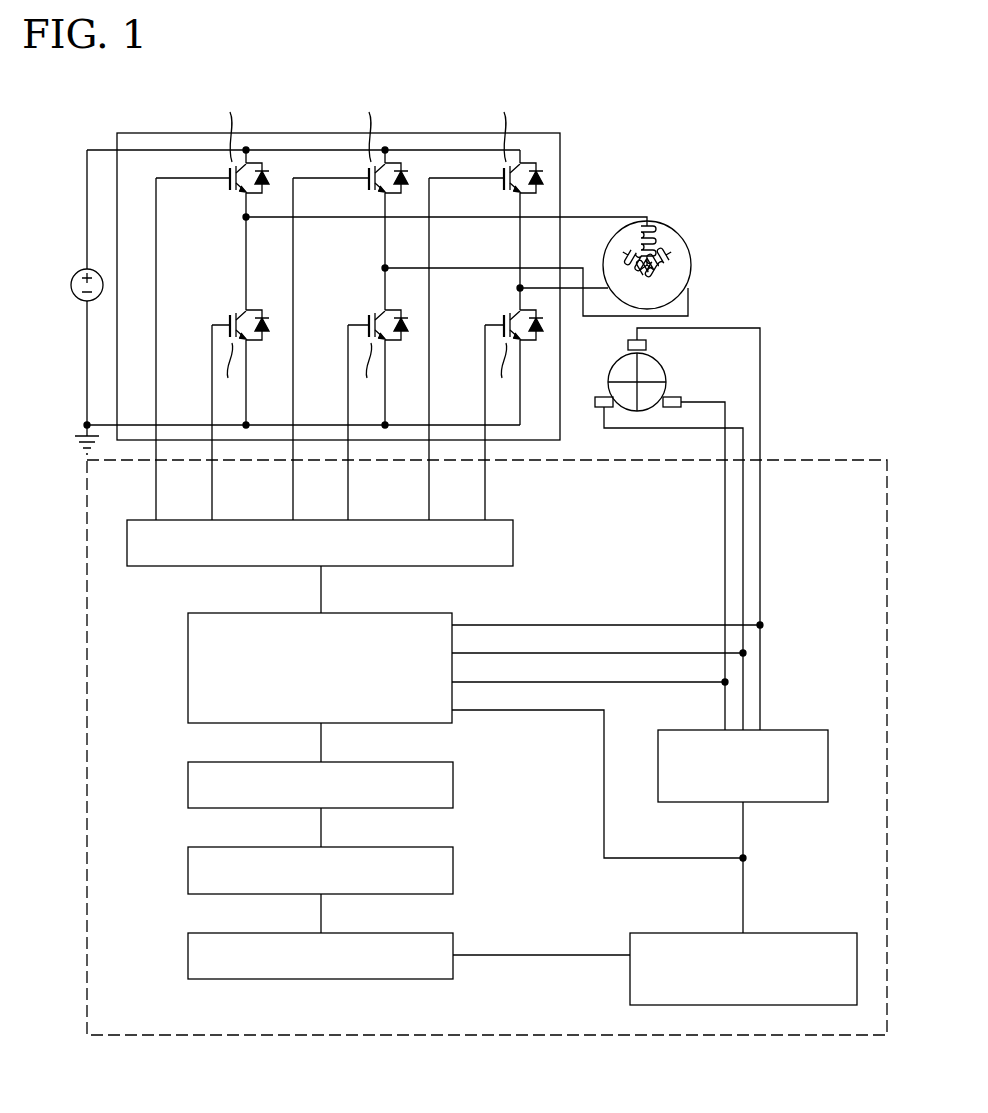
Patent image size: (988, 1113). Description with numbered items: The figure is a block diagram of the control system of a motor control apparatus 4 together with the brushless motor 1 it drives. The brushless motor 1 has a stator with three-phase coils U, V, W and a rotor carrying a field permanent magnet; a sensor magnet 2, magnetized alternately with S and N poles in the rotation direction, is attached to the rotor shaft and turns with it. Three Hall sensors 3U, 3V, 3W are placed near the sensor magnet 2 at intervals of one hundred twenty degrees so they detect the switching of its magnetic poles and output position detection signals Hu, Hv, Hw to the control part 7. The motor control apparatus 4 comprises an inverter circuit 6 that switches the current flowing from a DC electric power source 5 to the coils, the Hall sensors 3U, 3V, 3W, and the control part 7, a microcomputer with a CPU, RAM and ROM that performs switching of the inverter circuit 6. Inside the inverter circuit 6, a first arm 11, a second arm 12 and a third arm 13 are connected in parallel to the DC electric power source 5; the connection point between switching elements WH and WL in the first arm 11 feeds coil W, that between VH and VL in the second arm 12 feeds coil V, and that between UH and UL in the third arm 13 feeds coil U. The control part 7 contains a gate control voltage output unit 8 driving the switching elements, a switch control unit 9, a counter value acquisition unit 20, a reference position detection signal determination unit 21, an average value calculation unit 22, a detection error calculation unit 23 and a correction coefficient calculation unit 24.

The brushless motor 1 is at (674, 217).
The sensor magnet 2 is at (667, 373).
The Hall sensor 3U is at (646, 345).
The Hall sensor 3V is at (600, 397).
The Hall sensor 3W is at (681, 396).
The motor control apparatus 4 is at (76, 247).
The DC electric power source 5 is at (71, 290).
The inverter circuit 6 is at (310, 133).
The control part 7 is at (843, 460).
The gate control voltage output unit 8 is at (513, 544).
The switch control unit 9 is at (444, 613).
The first arm 11 is at (246, 248).
The second arm 12 is at (385, 248).
The third arm 13 is at (520, 248).
The counter value acquisition unit 20 is at (806, 730).
The reference position detection signal determination unit 21 is at (820, 933).
The average value calculation unit 22 is at (453, 936).
The detection error calculation unit 23 is at (453, 868).
The correction coefficient calculation unit 24 is at (453, 782).